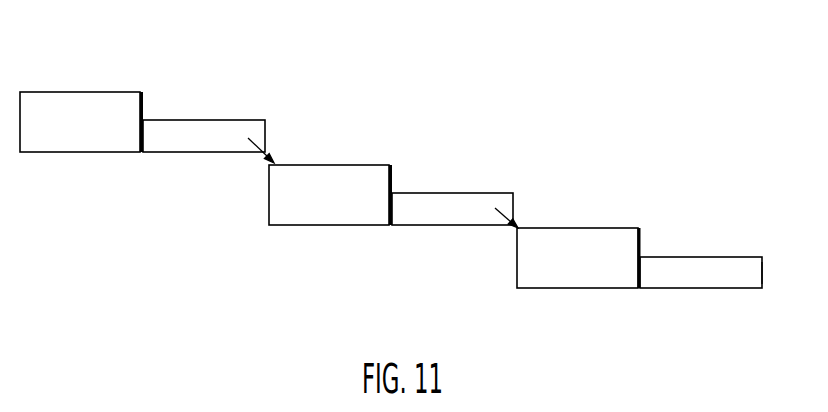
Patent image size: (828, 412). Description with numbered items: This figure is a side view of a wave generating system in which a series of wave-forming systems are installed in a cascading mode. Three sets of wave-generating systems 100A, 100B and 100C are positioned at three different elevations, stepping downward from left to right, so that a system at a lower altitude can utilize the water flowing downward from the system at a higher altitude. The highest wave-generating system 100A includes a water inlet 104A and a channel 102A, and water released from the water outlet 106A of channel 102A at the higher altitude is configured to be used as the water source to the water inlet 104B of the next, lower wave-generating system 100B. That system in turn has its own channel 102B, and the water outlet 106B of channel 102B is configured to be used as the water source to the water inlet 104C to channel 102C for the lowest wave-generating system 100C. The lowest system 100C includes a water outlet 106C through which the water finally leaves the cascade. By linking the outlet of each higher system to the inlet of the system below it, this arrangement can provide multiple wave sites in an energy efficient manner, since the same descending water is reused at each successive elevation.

The wave-generating system 100A is at (149, 163).
The channel 102A is at (178, 125).
The water inlet 104A is at (141, 92).
The water outlet 106A is at (266, 140).
The wave-generating system 100B is at (397, 235).
The channel 102B is at (436, 200).
The water inlet 104B is at (389, 165).
The water outlet 106B is at (514, 208).
The wave-generating system 100C is at (647, 299).
The channel 102C is at (685, 256).
The water inlet 104C is at (638, 228).
The water outlet 106C is at (763, 274).